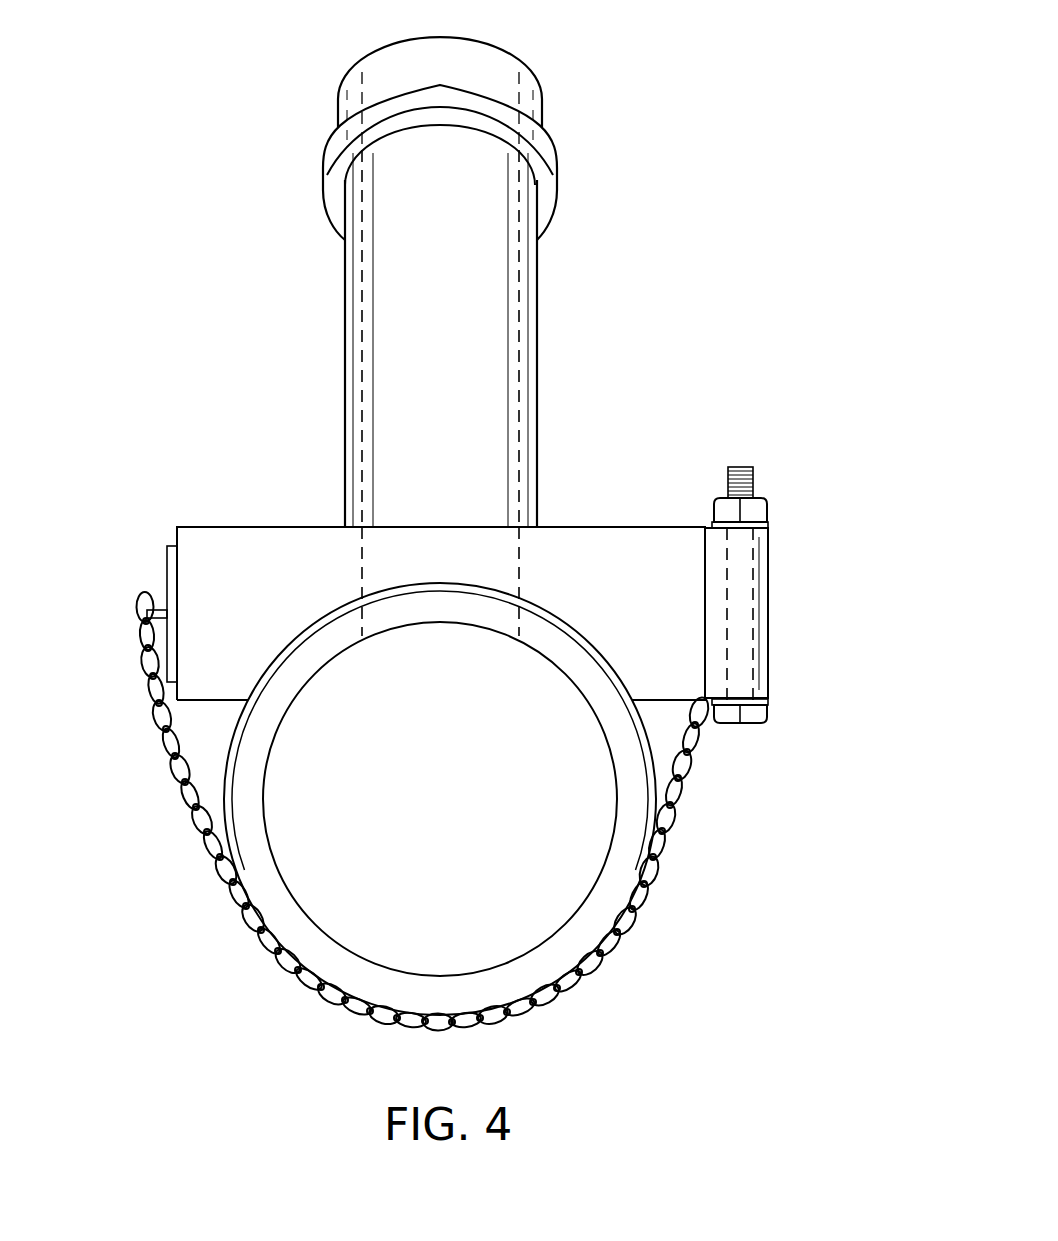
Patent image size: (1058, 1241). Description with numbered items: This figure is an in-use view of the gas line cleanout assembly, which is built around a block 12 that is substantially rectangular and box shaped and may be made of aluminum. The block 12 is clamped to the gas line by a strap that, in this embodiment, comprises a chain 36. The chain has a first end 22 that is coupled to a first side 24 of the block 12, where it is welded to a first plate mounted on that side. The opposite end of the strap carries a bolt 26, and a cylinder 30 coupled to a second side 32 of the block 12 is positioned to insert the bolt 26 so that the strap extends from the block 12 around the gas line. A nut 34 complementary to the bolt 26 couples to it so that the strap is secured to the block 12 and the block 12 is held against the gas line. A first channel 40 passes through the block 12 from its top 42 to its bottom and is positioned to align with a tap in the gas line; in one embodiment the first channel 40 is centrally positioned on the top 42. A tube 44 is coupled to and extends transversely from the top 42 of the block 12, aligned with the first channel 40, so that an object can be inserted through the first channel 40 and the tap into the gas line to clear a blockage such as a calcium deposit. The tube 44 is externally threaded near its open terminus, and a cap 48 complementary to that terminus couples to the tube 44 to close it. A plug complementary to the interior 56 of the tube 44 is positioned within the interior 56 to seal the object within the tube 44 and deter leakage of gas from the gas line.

The block 12 is at (643, 548).
The first end 22 is at (152, 607).
The first side 24 is at (167, 557).
The bolt 26 is at (740, 622).
The cylinder 30 is at (765, 570).
The second side 32 is at (707, 658).
The nut 34 is at (758, 510).
The chain 36 is at (197, 813).
The first channel 40 is at (432, 552).
The top 42 is at (565, 525).
The tube 44 is at (537, 277).
The cap 48 is at (513, 80).
The interior 56 is at (467, 326).